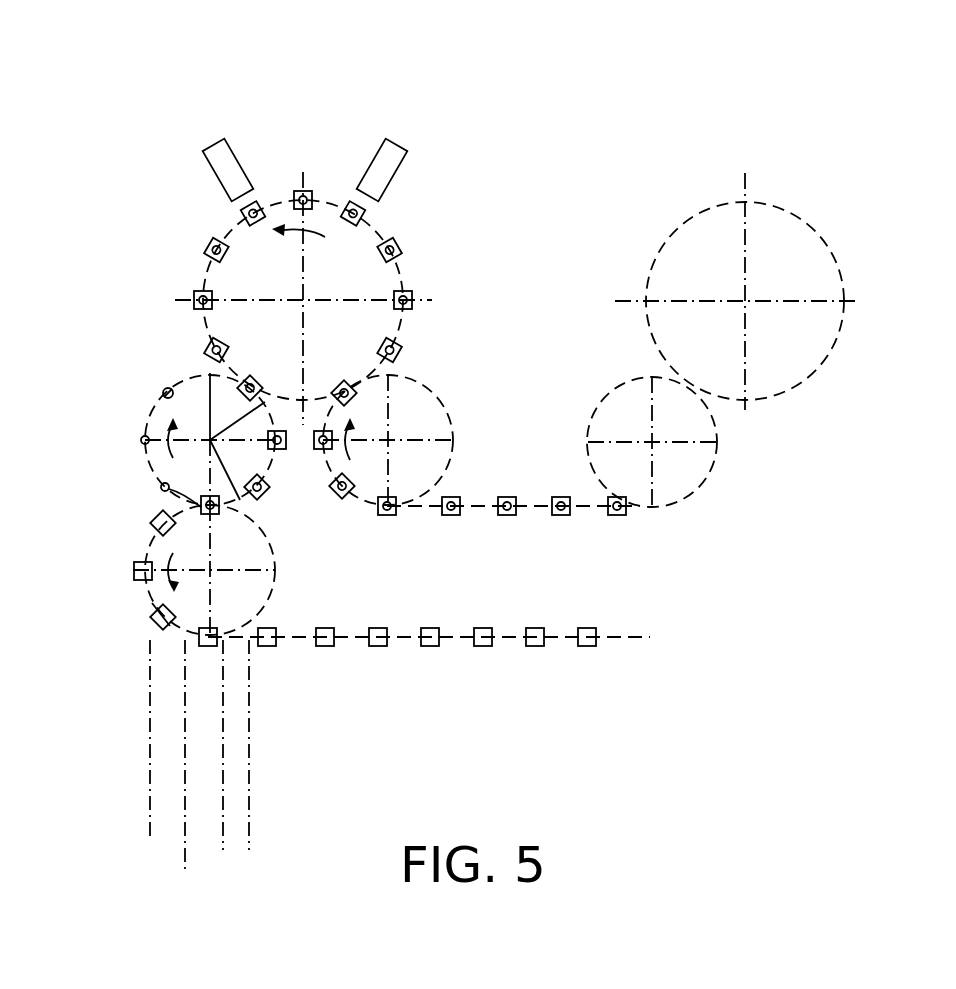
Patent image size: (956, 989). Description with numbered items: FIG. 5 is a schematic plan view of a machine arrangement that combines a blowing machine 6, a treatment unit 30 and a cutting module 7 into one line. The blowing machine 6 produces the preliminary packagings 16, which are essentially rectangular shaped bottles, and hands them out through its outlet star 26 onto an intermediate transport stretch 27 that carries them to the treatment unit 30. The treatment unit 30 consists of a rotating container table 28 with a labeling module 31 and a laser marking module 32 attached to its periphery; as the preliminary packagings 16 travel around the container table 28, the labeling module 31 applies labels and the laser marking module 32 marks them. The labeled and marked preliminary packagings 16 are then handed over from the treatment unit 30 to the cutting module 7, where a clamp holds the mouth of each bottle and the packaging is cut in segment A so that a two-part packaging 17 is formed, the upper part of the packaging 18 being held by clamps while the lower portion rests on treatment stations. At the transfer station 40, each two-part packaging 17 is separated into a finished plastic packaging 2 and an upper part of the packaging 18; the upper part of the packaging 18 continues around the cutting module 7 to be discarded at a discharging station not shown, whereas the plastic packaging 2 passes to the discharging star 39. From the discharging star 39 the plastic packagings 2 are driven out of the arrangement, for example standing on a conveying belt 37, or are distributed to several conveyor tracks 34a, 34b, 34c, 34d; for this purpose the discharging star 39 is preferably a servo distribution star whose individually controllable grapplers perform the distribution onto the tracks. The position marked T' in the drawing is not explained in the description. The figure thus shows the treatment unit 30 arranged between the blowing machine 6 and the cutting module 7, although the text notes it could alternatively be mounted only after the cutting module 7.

The plastic packaging 2 is at (153, 525).
The blowing machine 6 is at (797, 240).
The cutting module 7 is at (190, 395).
The preliminary packaging 16 is at (400, 349).
The two-part packaging 17 is at (278, 449).
The upper part of the packaging 18 is at (161, 488).
The outlet star 26 is at (607, 417).
The intermediate transport stretch 27 is at (530, 510).
The container table 28 is at (400, 273).
The treatment unit 30 is at (398, 94).
The labeling module 31 is at (387, 168).
The laser marking module 32 is at (228, 178).
The conveyor track 34a is at (150, 840).
The conveyor track 34b is at (182, 895).
The conveyor track 34c is at (222, 840).
The conveyor track 34d is at (249, 843).
The conveying belt 37 is at (618, 641).
The discharging star 39 is at (173, 630).
The transfer station 40 is at (219, 510).
The segment A is at (272, 473).
The position T' is at (90, 605).